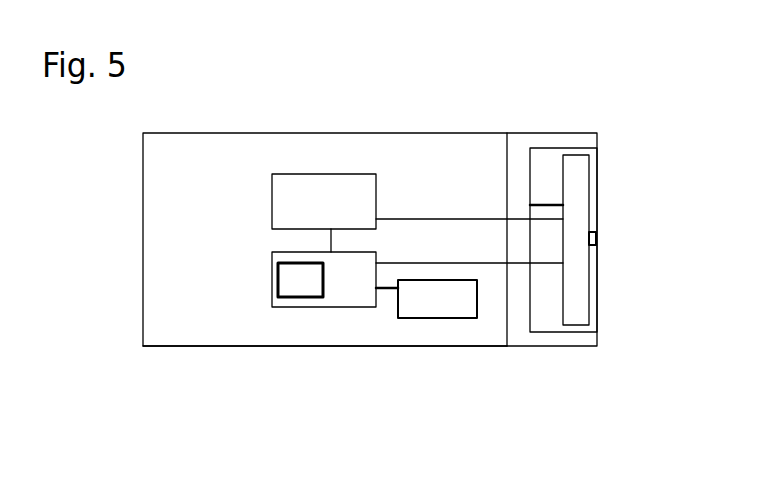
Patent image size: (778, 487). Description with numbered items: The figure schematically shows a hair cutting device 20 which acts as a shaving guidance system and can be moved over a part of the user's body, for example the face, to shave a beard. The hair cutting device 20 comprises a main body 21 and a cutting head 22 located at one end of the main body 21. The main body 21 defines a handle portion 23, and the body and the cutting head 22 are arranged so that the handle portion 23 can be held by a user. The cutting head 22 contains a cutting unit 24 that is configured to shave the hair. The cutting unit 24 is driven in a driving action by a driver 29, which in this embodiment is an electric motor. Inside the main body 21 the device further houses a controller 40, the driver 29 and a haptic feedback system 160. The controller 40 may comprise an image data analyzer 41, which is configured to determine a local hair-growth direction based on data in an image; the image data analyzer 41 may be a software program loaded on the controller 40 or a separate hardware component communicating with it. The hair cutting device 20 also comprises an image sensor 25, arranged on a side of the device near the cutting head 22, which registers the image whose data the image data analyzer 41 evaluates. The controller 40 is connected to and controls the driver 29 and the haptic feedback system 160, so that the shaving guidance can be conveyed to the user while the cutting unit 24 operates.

The hair cutting device 20 is at (406, 92).
The main body 21 is at (202, 133).
The cutting head 22 is at (547, 337).
The handle portion 23 is at (183, 334).
The cutting unit 24 is at (585, 282).
The image sensor 25 is at (596, 237).
The driver 29 is at (318, 174).
The controller 40 is at (323, 308).
The image data analyzer 41 is at (288, 280).
The haptic feedback system 160 is at (452, 318).